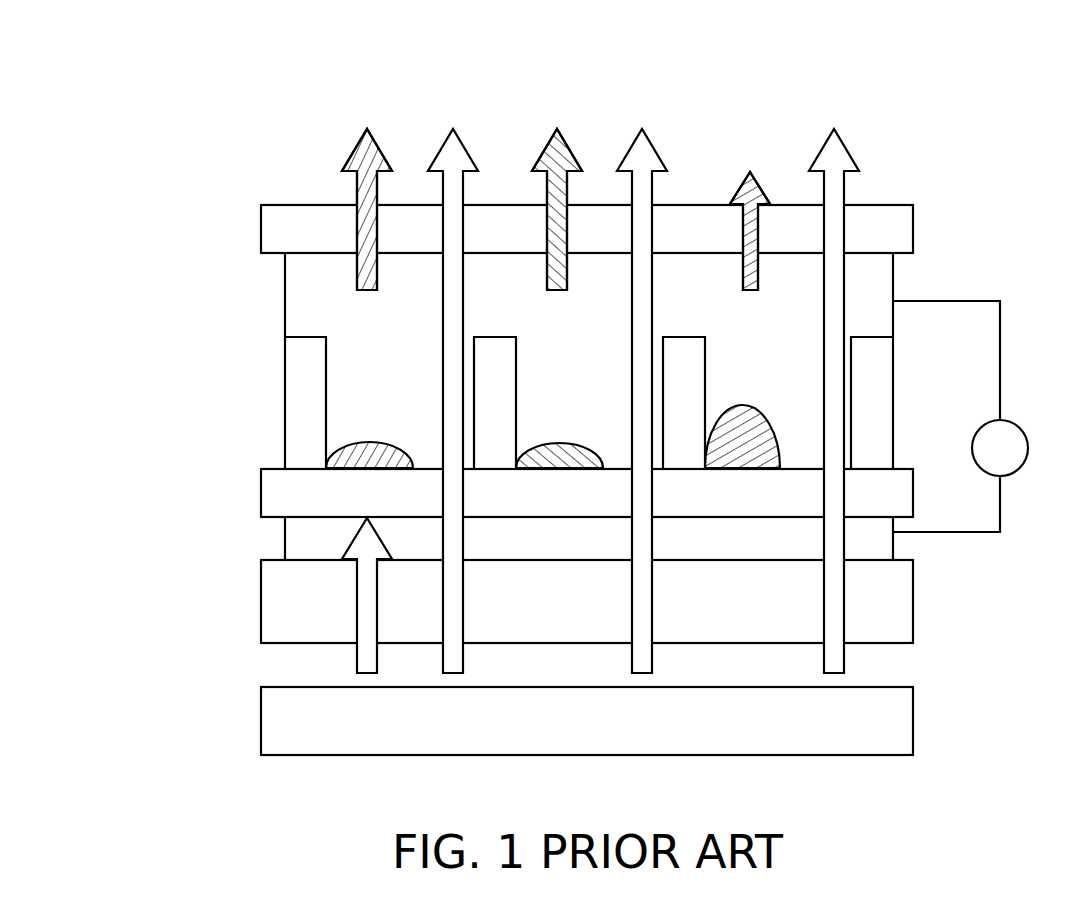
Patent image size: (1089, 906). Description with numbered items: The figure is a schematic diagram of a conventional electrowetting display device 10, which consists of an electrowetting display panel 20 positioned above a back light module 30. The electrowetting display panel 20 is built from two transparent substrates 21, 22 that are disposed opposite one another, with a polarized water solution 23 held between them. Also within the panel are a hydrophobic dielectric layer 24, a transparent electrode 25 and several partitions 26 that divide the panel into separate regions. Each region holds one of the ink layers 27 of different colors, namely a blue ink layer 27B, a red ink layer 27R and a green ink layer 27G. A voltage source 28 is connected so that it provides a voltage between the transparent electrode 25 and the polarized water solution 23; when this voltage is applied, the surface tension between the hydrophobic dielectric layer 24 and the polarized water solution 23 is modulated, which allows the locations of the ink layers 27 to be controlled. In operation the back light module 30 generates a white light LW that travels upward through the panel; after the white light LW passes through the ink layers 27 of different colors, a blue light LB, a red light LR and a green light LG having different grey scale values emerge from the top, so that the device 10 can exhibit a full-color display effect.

The electrowetting display device 10 is at (978, 112).
The electrowetting display panel 20 is at (173, 607).
The transparent substrate 21 is at (277, 232).
The transparent substrate 22 is at (285, 597).
The polarized water solution 23 is at (303, 306).
The hydrophobic dielectric layer 24 is at (287, 495).
The transparent electrode 25 is at (312, 540).
The partitions 26 is at (305, 400).
The ink layers 27 is at (568, 410).
The blue ink layer 27B is at (386, 414).
The red ink layer 27R is at (558, 443).
The green ink layer 27G is at (758, 406).
The voltage source 28 is at (1019, 430).
The back light module 30 is at (285, 723).
The blue light LB is at (380, 148).
The red light LR is at (570, 148).
The green light LG is at (762, 188).
The white light LW is at (468, 148).